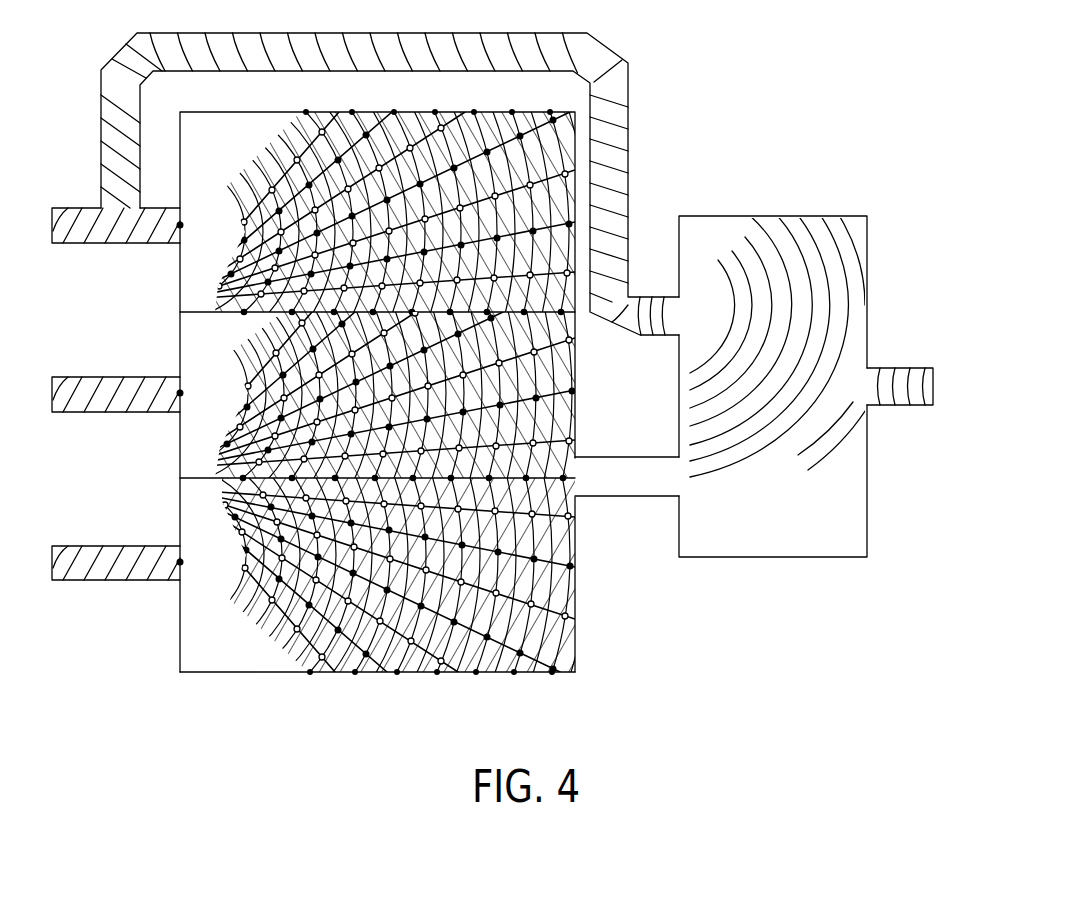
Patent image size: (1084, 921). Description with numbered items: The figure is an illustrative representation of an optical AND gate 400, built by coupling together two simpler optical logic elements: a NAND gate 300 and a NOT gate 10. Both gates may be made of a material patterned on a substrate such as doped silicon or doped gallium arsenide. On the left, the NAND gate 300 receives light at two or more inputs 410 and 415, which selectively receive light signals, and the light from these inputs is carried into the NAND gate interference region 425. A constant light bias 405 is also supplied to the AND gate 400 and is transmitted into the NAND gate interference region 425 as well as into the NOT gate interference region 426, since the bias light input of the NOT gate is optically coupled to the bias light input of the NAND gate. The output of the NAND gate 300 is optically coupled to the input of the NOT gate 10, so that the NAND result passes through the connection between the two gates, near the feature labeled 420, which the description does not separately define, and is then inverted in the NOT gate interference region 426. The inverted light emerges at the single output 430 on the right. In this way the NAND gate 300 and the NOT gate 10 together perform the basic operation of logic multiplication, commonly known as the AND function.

The AND gate 400 is at (660, 48).
The light bias 405 is at (76, 207).
The input 410 is at (114, 376).
The input 415 is at (114, 545).
The NAND gate 300 is at (231, 698).
The NAND gate interference region 425 is at (528, 677).
The outlet channel 420 is at (629, 456).
The NOT gate interference region 426 is at (860, 502).
The output 430 is at (898, 367).
The NOT gate 10 is at (800, 582).